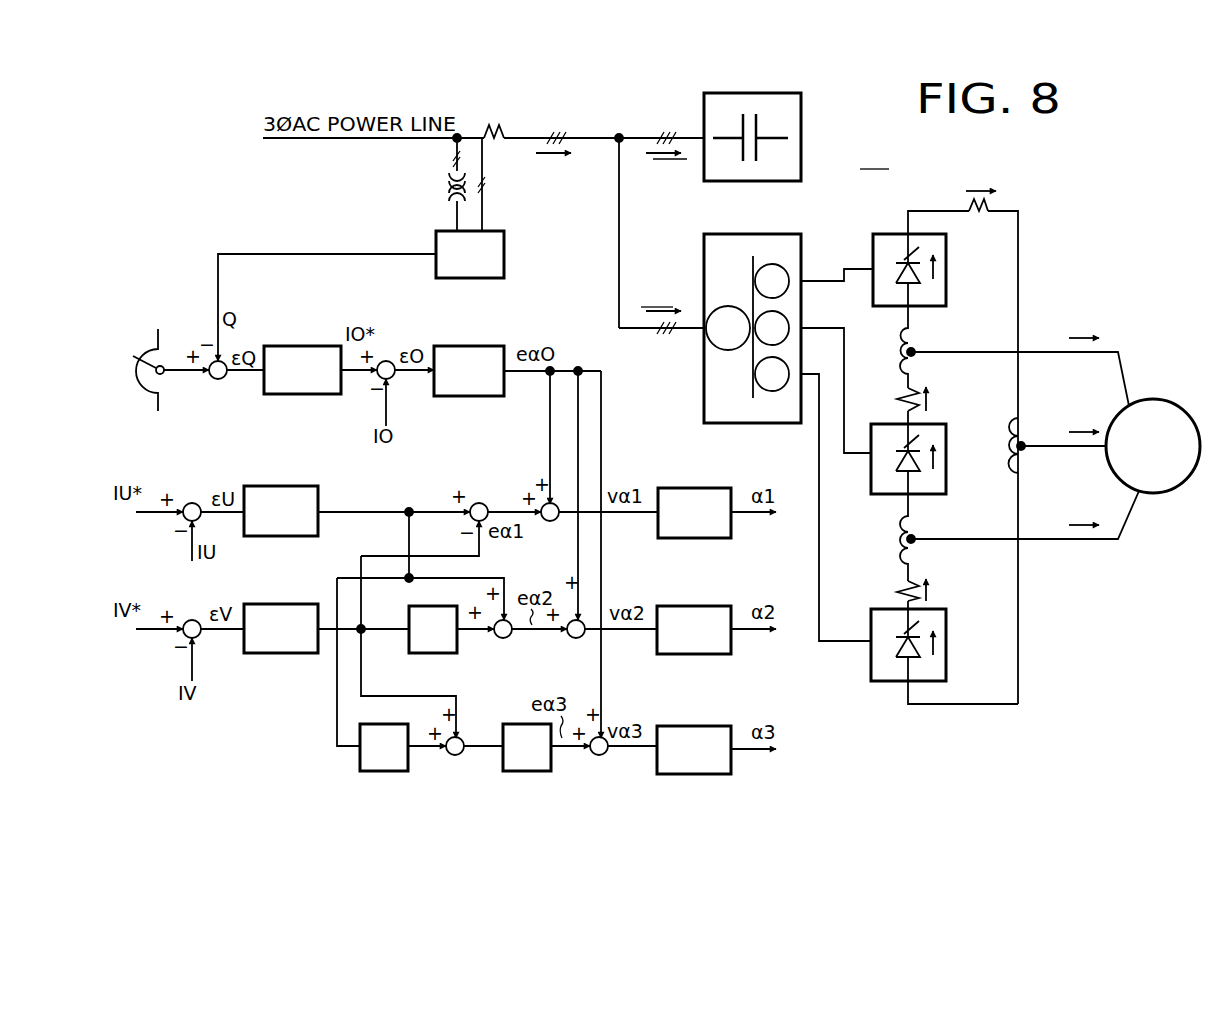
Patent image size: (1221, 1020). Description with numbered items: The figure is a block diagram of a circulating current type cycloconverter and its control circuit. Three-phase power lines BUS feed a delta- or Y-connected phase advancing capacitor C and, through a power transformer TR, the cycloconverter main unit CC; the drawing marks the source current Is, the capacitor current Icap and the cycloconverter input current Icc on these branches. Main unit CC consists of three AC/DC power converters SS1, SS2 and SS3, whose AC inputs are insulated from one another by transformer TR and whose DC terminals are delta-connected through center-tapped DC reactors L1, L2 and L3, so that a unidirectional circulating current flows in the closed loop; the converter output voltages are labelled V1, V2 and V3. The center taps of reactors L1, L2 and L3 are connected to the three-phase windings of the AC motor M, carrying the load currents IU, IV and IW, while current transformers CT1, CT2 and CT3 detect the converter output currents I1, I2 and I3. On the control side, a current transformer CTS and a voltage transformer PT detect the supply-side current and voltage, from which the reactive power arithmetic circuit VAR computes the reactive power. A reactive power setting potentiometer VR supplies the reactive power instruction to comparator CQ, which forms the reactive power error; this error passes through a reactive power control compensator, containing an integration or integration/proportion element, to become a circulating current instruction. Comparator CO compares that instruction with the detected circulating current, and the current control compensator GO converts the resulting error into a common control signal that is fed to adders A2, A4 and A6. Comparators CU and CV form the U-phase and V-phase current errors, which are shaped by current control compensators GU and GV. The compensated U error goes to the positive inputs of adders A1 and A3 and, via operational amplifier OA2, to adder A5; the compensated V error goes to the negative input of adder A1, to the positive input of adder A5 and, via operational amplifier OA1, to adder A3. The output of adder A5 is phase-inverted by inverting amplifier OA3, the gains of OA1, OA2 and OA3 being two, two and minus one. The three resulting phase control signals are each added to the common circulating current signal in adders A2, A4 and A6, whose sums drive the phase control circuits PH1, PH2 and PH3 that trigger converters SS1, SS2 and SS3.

The current transformer CTS is at (497, 121).
The power lines BUS is at (592, 138).
The voltage transformer PT is at (445, 184).
The reactive power arithmetic circuit VAR is at (470, 254).
The phase advancing capacitor C is at (802, 122).
The power transformer TR is at (757, 422).
The cycloconverter main unit CC is at (874, 158).
The AC/DC power converter SS1 is at (868, 233).
The AC/DC power converter SS2 is at (862, 482).
The AC/DC power converter SS3 is at (862, 669).
The current transformer CT1 is at (965, 218).
The current transformer CT2 is at (904, 388).
The current transformer CT3 is at (904, 574).
The thyristor converter output voltage V1 is at (924, 270).
The thyristor converter output voltage V2 is at (923, 459).
The thyristor converter output voltage V3 is at (923, 645).
The DC reactor L1 is at (1001, 445).
The DC reactor L2 is at (888, 347).
The DC reactor L3 is at (886, 537).
The three-phase AC motor M is at (1153, 446).
The reactive power setting potentiometer VR is at (171, 359).
The comparator CQ is at (219, 378).
The comparator CO is at (389, 358).
The current control compensator GO is at (469, 371).
The comparator CU is at (191, 502).
The comparator CV is at (191, 619).
The current control compensator GU is at (281, 511).
The current control compensator GV is at (281, 628).
The operational amplifier OA1 is at (452, 652).
The operational amplifier OA2 is at (388, 770).
The inverting amplifier OA3 is at (522, 770).
The adder A1 is at (477, 502).
The adder A2 is at (549, 520).
The adder A3 is at (502, 637).
The adder A4 is at (575, 637).
The adder A5 is at (454, 754).
The adder A6 is at (598, 754).
The phase control circuit PH1 is at (694, 513).
The phase control circuit PH2 is at (694, 630).
The phase control circuit PH3 is at (694, 750).
The source current Is is at (553, 166).
The capacitor current Icap is at (664, 166).
The cycloconverter input current Icc is at (661, 309).
The output current I1 is at (981, 179).
The output current I2 is at (937, 400).
The output current I3 is at (937, 591).
The load current IU is at (1070, 431).
The load current IV is at (1070, 337).
The load current IW is at (1067, 524).